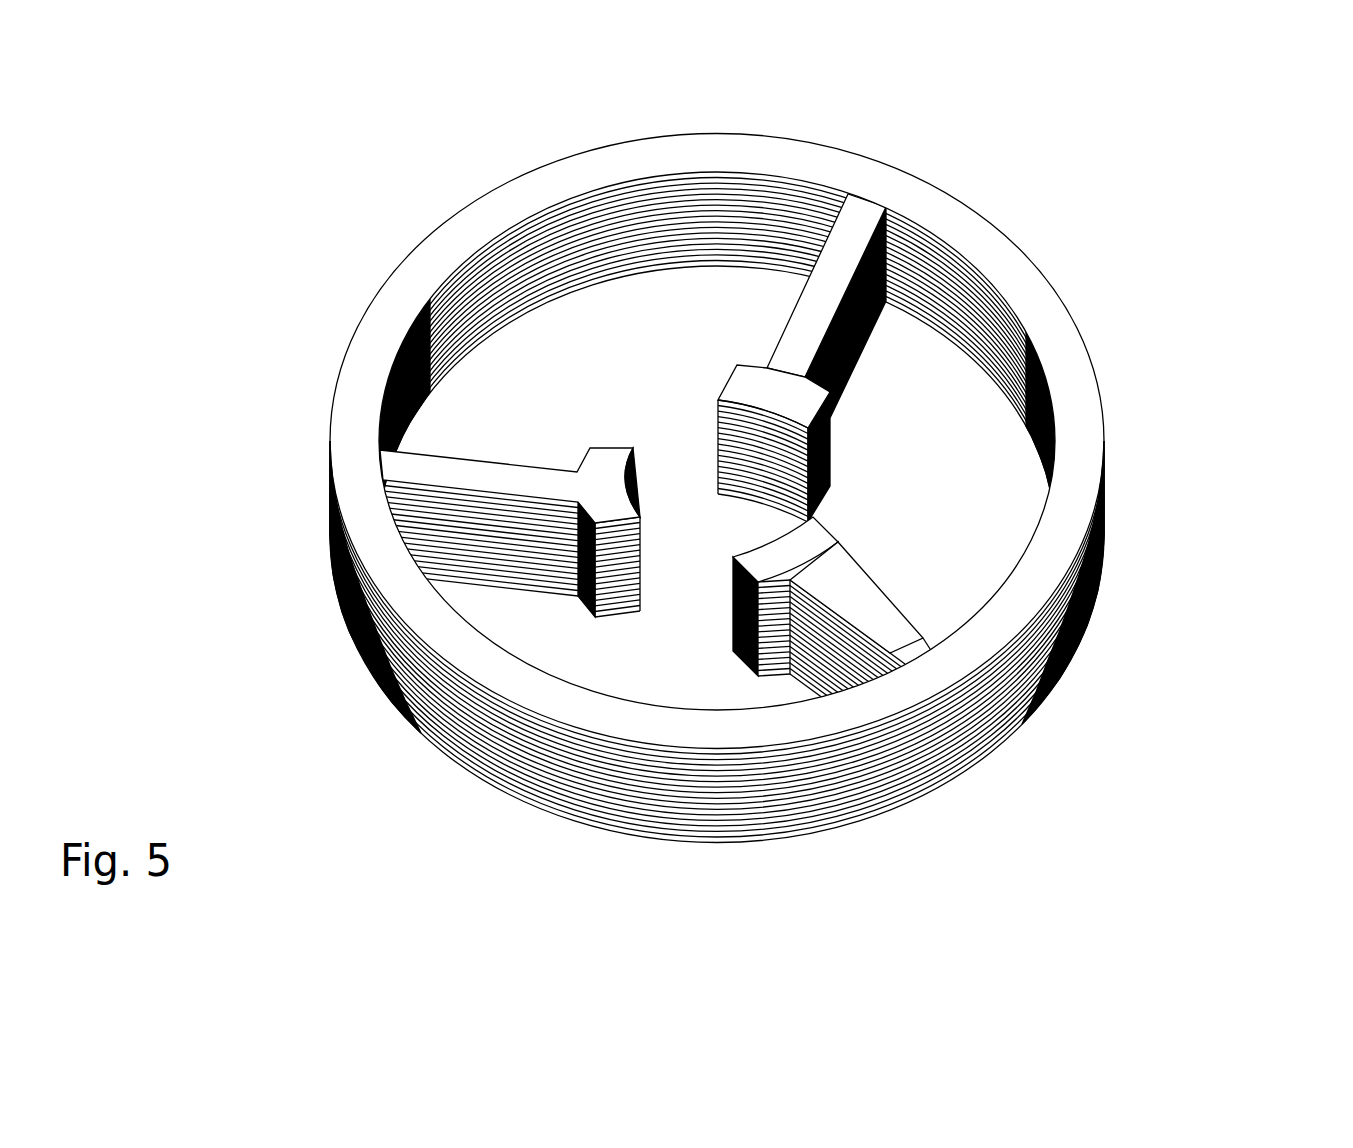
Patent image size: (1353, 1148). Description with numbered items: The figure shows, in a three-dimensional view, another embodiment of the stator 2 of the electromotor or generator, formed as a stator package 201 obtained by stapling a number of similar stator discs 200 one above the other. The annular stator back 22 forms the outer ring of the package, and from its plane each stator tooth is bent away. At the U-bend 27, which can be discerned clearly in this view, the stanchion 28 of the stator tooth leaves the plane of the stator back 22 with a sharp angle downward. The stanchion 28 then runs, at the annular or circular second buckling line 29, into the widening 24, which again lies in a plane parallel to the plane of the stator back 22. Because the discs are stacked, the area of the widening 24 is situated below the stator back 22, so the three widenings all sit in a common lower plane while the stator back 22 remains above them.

The stator 2 is at (769, 495).
The annular stator back 22 is at (620, 157).
The widening 24 is at (602, 473).
The buckling line (U-bend) 27 is at (906, 300).
The stanchion 28 is at (862, 215).
The second buckling line 29 is at (718, 888).
The stator disc 200 is at (711, 648).
The stator package 201 is at (1162, 546).